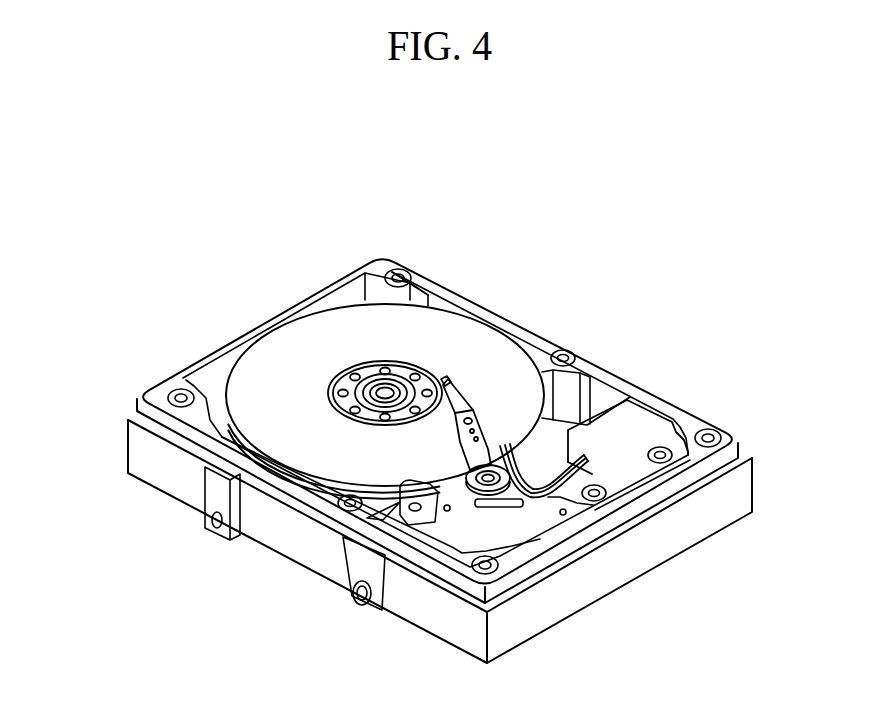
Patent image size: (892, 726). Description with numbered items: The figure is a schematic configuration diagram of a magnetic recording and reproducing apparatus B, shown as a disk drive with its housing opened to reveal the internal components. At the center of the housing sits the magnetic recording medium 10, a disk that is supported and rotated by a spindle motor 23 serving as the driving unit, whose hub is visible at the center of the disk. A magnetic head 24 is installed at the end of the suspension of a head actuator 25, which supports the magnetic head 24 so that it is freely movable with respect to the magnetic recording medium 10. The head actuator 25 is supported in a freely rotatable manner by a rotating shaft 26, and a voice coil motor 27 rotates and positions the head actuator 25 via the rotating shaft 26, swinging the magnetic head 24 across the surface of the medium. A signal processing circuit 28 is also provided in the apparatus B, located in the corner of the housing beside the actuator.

The magnetic recording and reproducing apparatus B is at (289, 242).
The magnetic recording medium 10 is at (434, 340).
The spindle motor 23 is at (343, 380).
The magnetic head 24 is at (447, 381).
The head actuator 25 is at (481, 428).
The rotating shaft 26 is at (447, 485).
The voice coil motor 27 is at (550, 500).
The signal processing circuit 28 is at (640, 437).